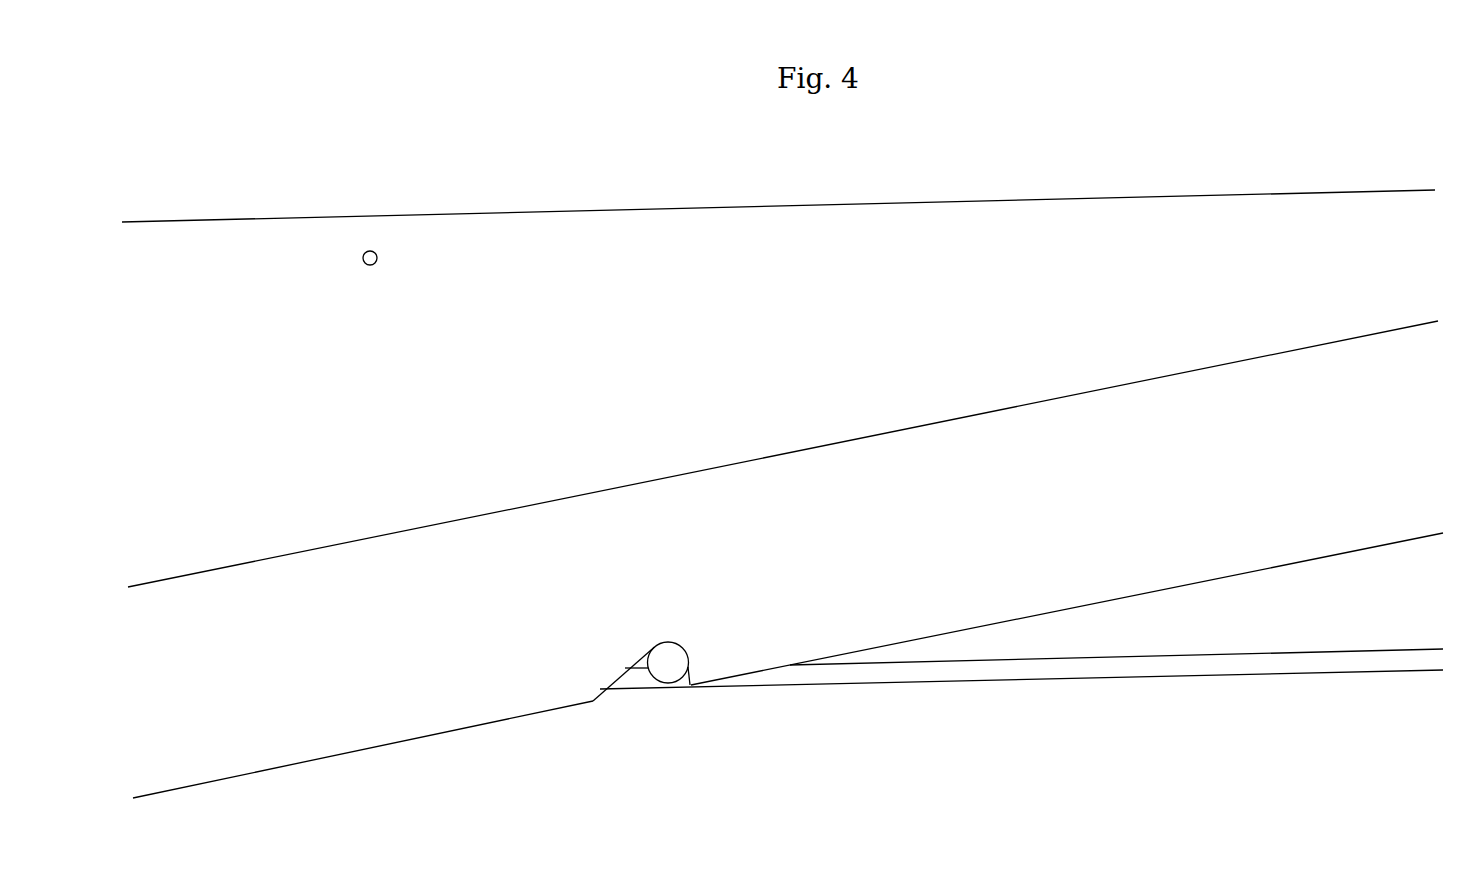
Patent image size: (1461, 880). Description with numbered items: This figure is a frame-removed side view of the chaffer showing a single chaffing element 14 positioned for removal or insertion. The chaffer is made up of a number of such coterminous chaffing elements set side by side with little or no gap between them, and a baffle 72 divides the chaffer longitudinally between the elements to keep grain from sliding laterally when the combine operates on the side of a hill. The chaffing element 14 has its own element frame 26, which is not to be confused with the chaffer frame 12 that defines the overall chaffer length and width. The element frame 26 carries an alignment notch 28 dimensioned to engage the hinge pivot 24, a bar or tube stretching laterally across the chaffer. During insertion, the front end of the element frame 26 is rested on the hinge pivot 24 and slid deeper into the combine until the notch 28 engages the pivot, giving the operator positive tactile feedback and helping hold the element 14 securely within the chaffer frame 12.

The chaffer frame 12 is at (988, 683).
The chaffing element 14 is at (1155, 592).
The hinge pivot 24 is at (663, 683).
The element frame 26 is at (453, 731).
The alignment notch 28 is at (598, 697).
The baffle 72 is at (535, 212).